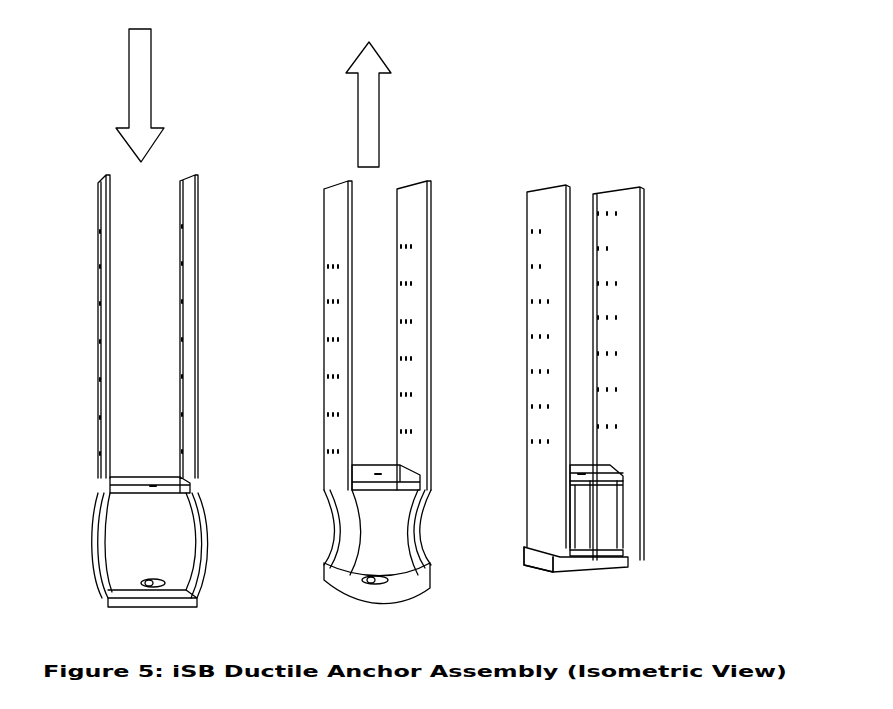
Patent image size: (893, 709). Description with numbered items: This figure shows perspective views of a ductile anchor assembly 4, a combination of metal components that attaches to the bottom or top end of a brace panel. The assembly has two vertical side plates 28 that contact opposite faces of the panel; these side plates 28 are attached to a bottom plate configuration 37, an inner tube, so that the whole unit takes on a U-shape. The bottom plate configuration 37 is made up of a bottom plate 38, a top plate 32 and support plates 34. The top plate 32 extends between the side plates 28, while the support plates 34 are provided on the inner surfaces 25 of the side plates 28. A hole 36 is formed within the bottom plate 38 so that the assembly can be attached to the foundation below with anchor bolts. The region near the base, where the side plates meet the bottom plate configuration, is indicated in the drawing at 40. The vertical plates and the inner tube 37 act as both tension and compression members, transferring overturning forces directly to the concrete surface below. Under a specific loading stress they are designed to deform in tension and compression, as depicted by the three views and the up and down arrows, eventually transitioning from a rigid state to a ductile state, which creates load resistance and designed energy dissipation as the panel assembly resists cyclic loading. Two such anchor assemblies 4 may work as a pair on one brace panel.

The ductile anchor assembly 4 is at (602, 387).
The inner surfaces 25 is at (611, 445).
The side plates 28 is at (632, 352).
The top plate 32 is at (594, 479).
The support plates 34 is at (604, 516).
The hole 36 is at (581, 553).
The bottom plate configuration 37 is at (110, 548).
The bottom plate 38 is at (598, 567).
The base 40 is at (543, 546).